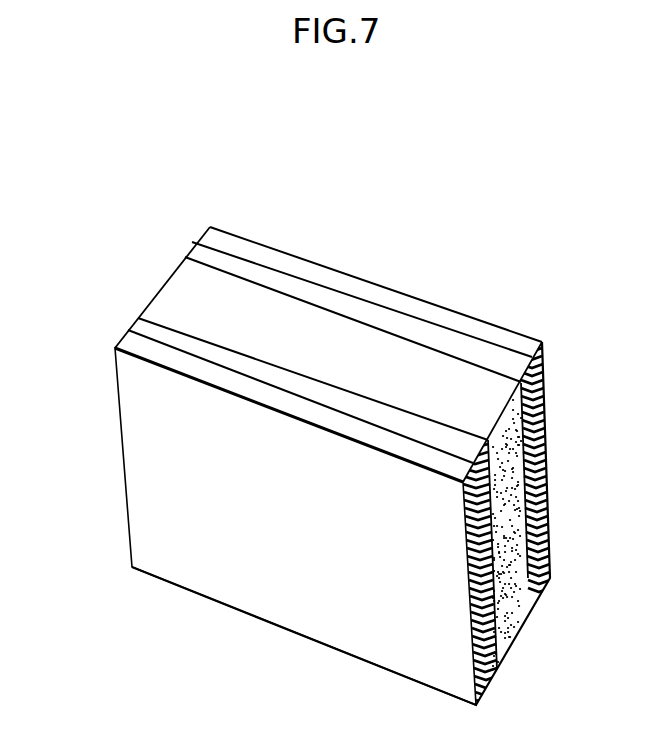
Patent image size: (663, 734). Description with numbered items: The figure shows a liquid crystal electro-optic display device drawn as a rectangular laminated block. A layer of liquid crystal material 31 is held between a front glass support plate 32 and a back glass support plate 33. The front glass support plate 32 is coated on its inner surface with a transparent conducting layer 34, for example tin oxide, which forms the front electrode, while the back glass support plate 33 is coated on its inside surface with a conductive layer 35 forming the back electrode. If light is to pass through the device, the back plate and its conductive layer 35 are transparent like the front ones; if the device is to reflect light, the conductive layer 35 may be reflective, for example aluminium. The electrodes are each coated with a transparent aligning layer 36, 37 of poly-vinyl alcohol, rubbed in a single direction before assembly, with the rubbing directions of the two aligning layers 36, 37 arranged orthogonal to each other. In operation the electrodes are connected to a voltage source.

The liquid crystal material 31 is at (170, 297).
The front glass support plate 32 is at (114, 347).
The back glass support plate 33 is at (493, 323).
The transparent conducting layer 34 is at (125, 325).
The conductive layer 35 is at (192, 236).
The transparent aligning layer 36 is at (135, 314).
The transparent aligning layer 37 is at (183, 251).